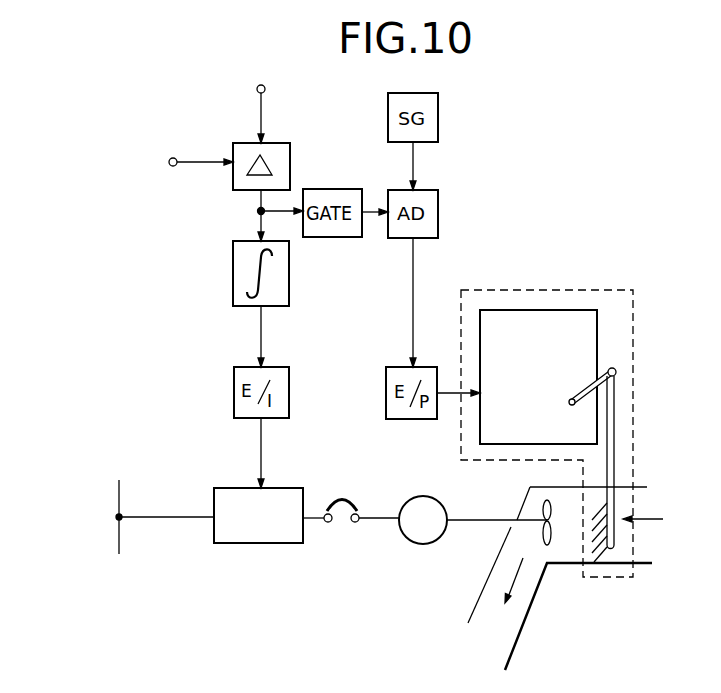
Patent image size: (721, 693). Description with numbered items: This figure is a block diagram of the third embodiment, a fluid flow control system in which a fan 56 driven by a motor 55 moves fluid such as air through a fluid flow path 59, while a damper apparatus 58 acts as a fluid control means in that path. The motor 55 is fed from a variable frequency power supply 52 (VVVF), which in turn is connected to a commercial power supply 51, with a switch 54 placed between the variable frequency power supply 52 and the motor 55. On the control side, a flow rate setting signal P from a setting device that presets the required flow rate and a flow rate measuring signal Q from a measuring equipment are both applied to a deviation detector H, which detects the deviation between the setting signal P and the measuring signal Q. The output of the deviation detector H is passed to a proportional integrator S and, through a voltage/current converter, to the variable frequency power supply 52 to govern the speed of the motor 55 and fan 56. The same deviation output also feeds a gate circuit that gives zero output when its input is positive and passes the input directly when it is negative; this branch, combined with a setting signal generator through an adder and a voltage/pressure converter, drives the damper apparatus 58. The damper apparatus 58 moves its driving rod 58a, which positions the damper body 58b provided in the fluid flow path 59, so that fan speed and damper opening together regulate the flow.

The commercial power supply 51 is at (119, 498).
The variable frequency power supply 52 is at (267, 537).
The switch 54 is at (343, 513).
The motor 55 is at (425, 510).
The fan 56 is at (540, 508).
The damper apparatus 58 is at (593, 290).
The driving rod 58a is at (617, 420).
The damper body 58b is at (605, 547).
The fluid flow path 59 is at (640, 487).
The flow rate setting signal P is at (173, 158).
The flow rate measuring signal Q is at (266, 86).
The deviation detector H is at (290, 158).
The proportional integrator S is at (243, 265).